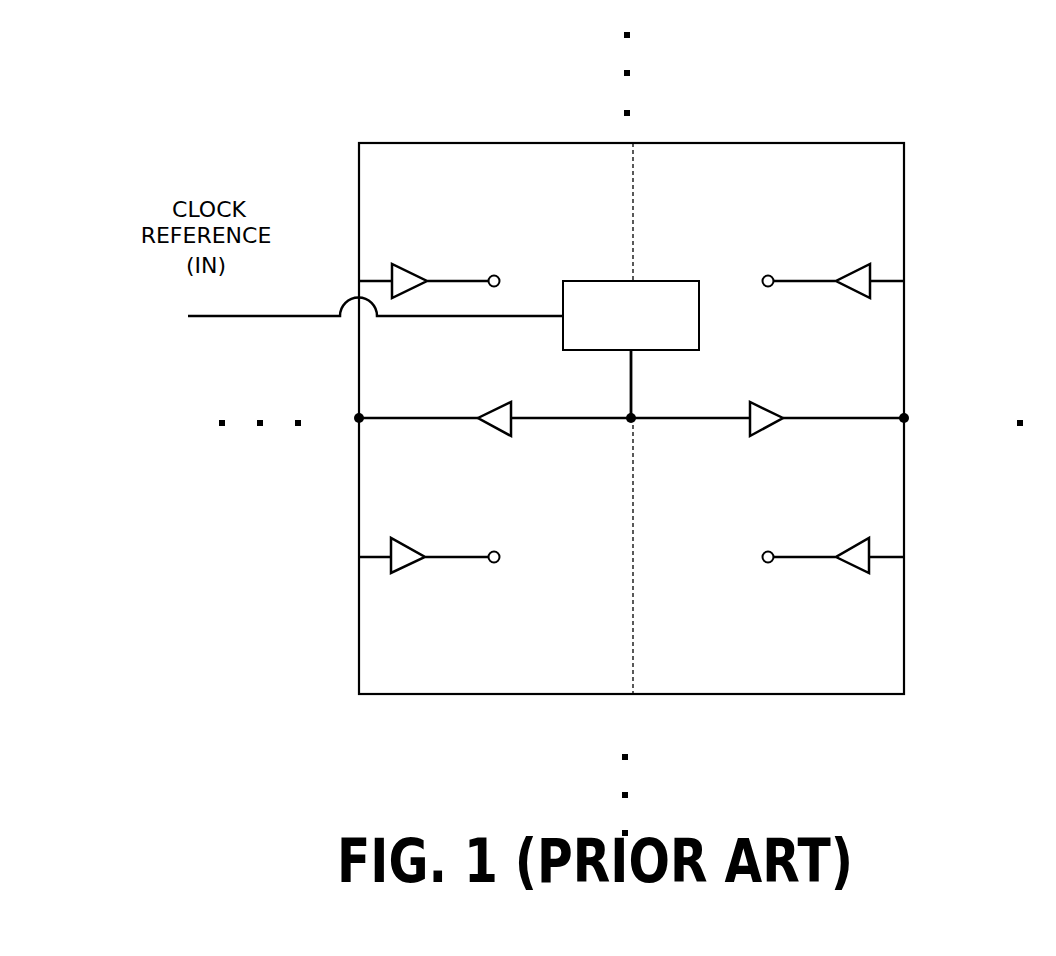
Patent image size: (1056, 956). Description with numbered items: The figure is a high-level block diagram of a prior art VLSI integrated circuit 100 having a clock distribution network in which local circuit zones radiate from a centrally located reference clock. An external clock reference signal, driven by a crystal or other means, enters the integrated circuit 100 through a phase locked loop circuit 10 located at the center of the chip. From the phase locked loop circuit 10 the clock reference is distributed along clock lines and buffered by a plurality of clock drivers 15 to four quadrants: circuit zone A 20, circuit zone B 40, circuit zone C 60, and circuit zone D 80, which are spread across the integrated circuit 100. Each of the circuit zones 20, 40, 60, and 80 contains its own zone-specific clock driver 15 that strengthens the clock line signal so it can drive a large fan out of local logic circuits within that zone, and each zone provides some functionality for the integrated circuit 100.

The integrated circuit 100 is at (768, 143).
The phase locked loop circuit 10 is at (631, 349).
The clock drivers 15 is at (412, 298).
The circuit zone A 20 is at (486, 185).
The circuit zone B 40 is at (775, 186).
The circuit zone C 60 is at (490, 647).
The circuit zone D 80 is at (768, 647).